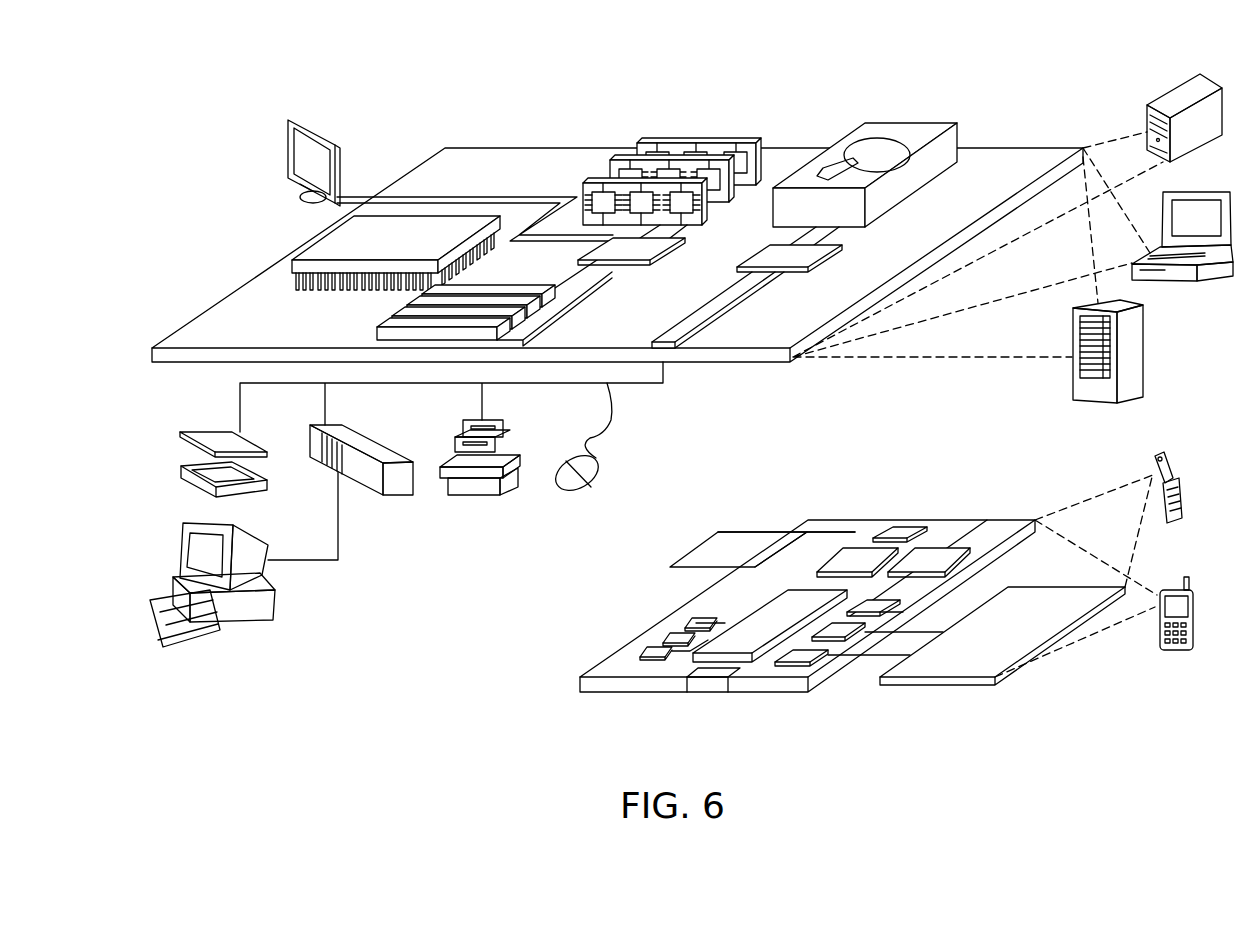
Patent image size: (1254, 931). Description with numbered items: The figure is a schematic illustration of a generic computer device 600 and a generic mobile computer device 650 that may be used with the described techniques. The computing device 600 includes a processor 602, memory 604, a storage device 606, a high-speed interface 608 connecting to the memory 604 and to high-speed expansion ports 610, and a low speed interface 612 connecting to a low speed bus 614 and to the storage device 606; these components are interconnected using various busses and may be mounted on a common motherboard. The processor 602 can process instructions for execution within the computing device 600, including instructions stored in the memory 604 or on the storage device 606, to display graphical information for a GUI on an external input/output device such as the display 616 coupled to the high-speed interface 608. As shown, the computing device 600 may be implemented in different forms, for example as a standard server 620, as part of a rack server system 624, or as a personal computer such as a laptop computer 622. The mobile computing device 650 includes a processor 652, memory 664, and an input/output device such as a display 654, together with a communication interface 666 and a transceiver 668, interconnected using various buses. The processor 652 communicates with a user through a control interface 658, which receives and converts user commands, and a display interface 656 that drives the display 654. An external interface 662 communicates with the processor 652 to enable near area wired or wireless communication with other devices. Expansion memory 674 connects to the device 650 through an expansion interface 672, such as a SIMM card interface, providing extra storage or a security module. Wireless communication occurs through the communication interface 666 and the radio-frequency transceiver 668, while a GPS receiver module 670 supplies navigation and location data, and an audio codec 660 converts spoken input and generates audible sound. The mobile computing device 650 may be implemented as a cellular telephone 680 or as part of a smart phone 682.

The computing device 600 is at (403, 100).
The processor 602 is at (313, 243).
The memory 604 is at (700, 142).
The storage device 606 is at (902, 125).
The high-speed interface 608 is at (642, 247).
The high-speed expansion ports 610 is at (393, 317).
The low speed interface 612 is at (768, 250).
The low speed bus 614 is at (668, 335).
The display 616 is at (300, 119).
The standard server 620 is at (1165, 97).
The laptop computer 622 is at (1212, 192).
The rack server system 624 is at (1145, 352).
The mobile computer device 650 is at (540, 700).
The processor 652 is at (742, 630).
The display 654 is at (1037, 602).
The display interface 656 is at (817, 650).
The control interface 658 is at (842, 628).
The audio codec 660 is at (877, 602).
The external interface 662 is at (707, 677).
The memory 664 is at (667, 637).
The communication interface 666 is at (858, 552).
The transceiver 668 is at (935, 552).
The GPS receiver module 670 is at (902, 527).
The expansion interface 672 is at (790, 532).
The expansion memory 674 is at (718, 532).
The cellular telephone 680 is at (1162, 450).
The smart phone 682 is at (1170, 590).